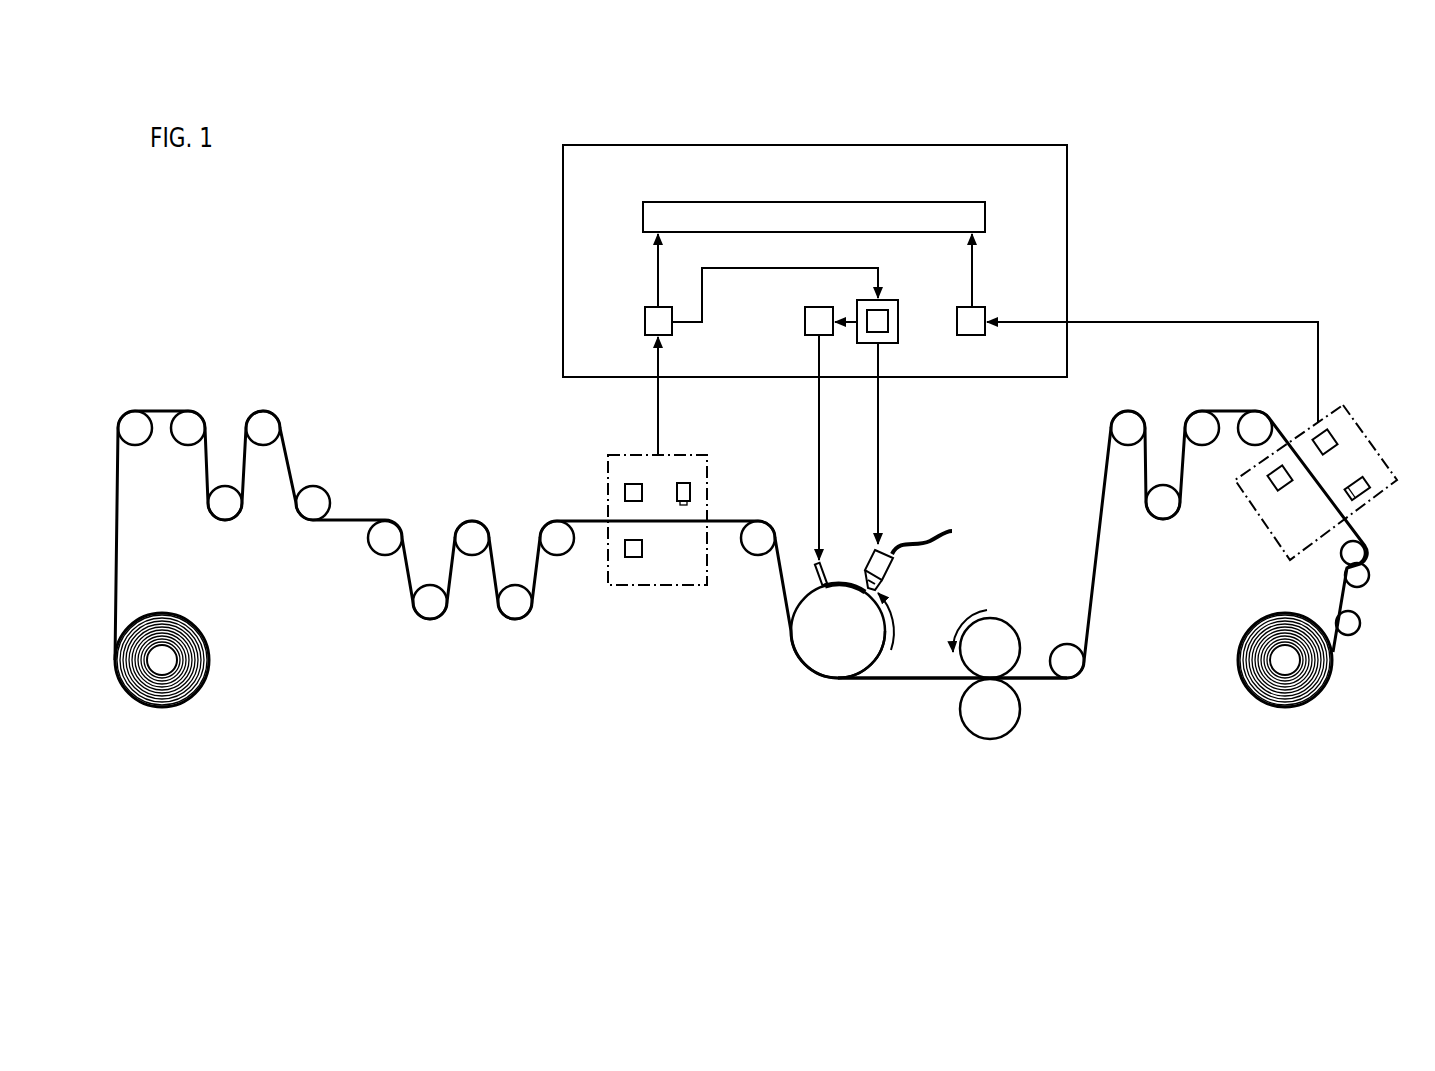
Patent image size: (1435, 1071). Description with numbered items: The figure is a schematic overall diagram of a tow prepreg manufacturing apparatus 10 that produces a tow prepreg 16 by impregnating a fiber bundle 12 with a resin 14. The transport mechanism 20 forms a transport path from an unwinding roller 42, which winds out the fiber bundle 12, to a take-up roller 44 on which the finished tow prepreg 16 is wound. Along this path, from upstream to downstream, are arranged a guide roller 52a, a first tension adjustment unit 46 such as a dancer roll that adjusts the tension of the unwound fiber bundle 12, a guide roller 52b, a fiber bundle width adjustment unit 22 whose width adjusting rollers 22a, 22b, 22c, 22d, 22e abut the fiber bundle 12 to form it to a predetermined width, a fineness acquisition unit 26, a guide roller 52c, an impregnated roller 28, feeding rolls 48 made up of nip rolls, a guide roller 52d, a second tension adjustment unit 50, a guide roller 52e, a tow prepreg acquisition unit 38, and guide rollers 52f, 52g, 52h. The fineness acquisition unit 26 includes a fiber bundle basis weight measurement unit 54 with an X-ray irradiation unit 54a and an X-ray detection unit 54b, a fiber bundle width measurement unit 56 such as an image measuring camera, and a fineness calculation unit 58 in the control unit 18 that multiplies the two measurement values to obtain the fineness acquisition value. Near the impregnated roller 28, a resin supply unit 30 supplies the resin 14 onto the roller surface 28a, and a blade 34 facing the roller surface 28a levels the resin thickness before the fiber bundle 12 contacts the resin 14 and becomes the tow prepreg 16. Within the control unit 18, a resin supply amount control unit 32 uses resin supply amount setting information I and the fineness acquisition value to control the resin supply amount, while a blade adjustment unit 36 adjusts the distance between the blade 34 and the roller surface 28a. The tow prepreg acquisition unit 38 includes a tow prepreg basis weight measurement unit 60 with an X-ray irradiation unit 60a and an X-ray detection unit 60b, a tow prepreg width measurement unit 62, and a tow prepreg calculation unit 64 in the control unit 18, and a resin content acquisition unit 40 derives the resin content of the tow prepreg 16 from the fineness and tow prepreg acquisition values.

The tow prepreg manufacturing apparatus 10 is at (320, 211).
The fiber bundle 12 is at (118, 565).
The resin 14 is at (848, 580).
The tow prepreg 16 is at (928, 683).
The control unit 18 is at (910, 350).
The transport mechanism 20 is at (181, 692).
The fiber bundle width adjustment unit 22 is at (465, 530).
The width adjusting roller 22a is at (382, 545).
The width adjusting roller 22b is at (428, 605).
The width adjusting roller 22c is at (473, 533).
The width adjusting roller 22d is at (517, 605).
The width adjusting roller 22e is at (558, 533).
The fineness acquisition unit 26 is at (668, 547).
The impregnated roller 28 is at (823, 655).
The roller surface 28a is at (877, 663).
The resin supply unit 30 is at (890, 568).
The resin supply amount control unit 32 is at (897, 315).
The blade 34 is at (815, 572).
The blade adjustment unit 36 is at (805, 310).
The tow prepreg acquisition unit 38 is at (1292, 479).
The resin content acquisition unit 40 is at (698, 202).
The unwinding roller 42 is at (163, 662).
The take-up roller 44 is at (1285, 662).
The first tension adjustment unit 46 is at (227, 530).
The feeding rolls 48 is at (976, 742).
The second tension adjustment unit 50 is at (1149, 524).
The guide roller 52a is at (135, 435).
The guide roller 52b is at (318, 487).
The guide roller 52c is at (758, 545).
The guide roller 52d is at (1067, 655).
The guide roller 52e is at (1255, 425).
The guide roller 52f is at (1348, 552).
The guide roller 52g is at (1369, 575).
The guide roller 52h is at (1360, 623).
The fiber bundle basis weight measurement unit 54 is at (646, 590).
The X-ray irradiation unit 54a is at (642, 492).
The X-ray detection unit 54b is at (621, 596).
The fiber bundle width measurement unit 56 is at (692, 490).
The fineness calculation unit 58 is at (645, 305).
The tow prepreg basis weight measurement unit 60 is at (1260, 524).
The X-ray irradiation unit 60a is at (1325, 451).
The X-ray detection unit 60b is at (1275, 482).
The tow prepreg width measurement unit 62 is at (1366, 480).
The tow prepreg calculation unit 64 is at (984, 305).
The resin supply amount setting information I is at (888, 322).